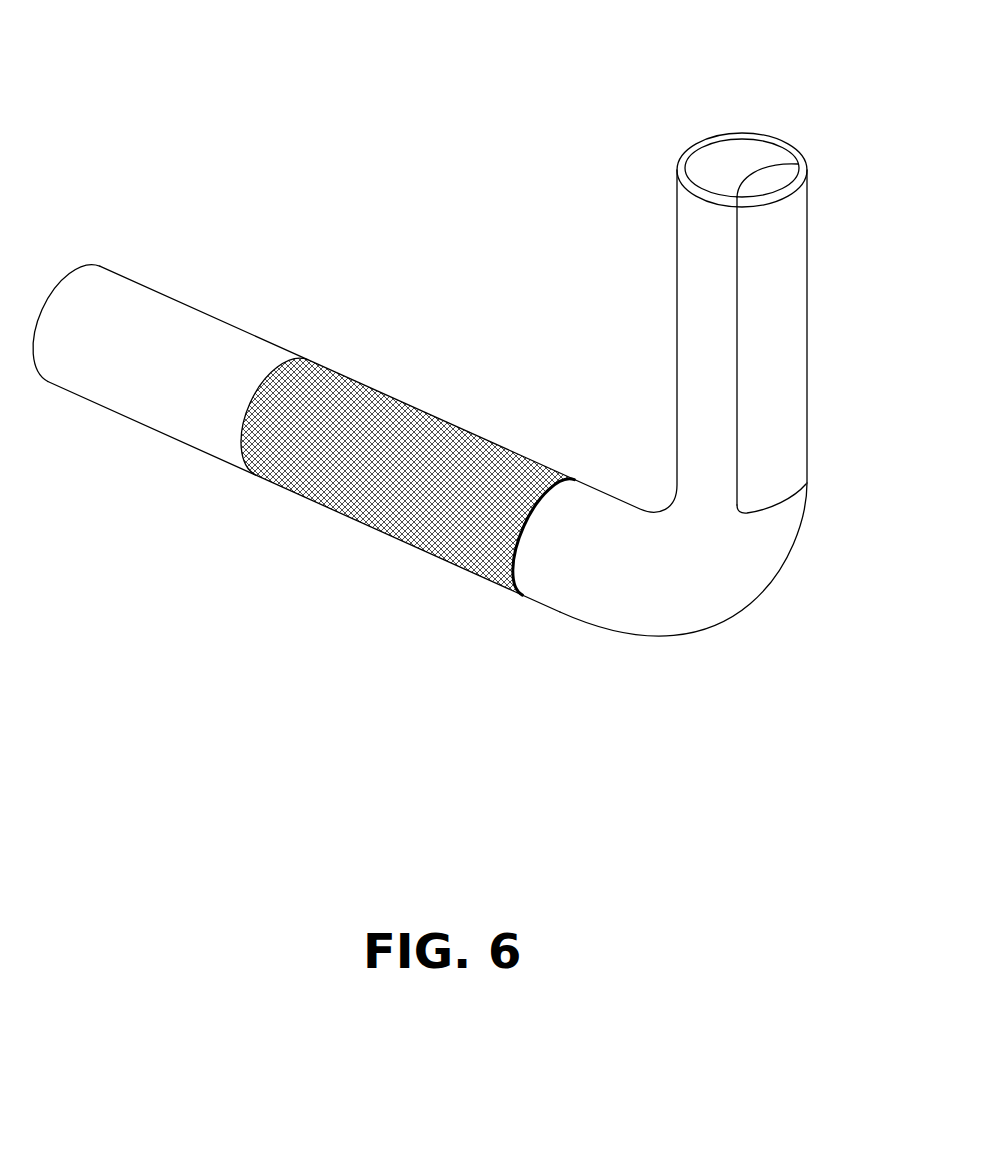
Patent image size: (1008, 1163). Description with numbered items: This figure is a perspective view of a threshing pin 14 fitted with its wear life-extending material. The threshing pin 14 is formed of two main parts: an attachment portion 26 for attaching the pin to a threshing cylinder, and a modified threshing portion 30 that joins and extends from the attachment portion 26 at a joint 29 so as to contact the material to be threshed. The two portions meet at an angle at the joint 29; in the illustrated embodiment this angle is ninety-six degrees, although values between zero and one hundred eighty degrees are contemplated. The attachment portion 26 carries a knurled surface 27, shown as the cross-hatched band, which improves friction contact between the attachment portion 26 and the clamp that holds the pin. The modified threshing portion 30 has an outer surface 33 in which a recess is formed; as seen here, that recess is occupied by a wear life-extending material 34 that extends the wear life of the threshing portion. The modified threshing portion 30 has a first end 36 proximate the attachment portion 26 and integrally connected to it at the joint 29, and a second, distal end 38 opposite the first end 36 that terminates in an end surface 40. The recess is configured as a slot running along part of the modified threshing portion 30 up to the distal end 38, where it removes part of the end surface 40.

The threshing pin 14 is at (249, 70).
The attachment portion 26 is at (401, 290).
The knurled surface 27 is at (418, 430).
The joint 29 is at (708, 597).
The modified threshing portion 30 is at (843, 304).
The outer surface 33 is at (698, 285).
The wear life-extending material 34 is at (796, 412).
The first end 36 is at (757, 533).
The distal end 38 is at (777, 173).
The end surface 40 is at (745, 150).